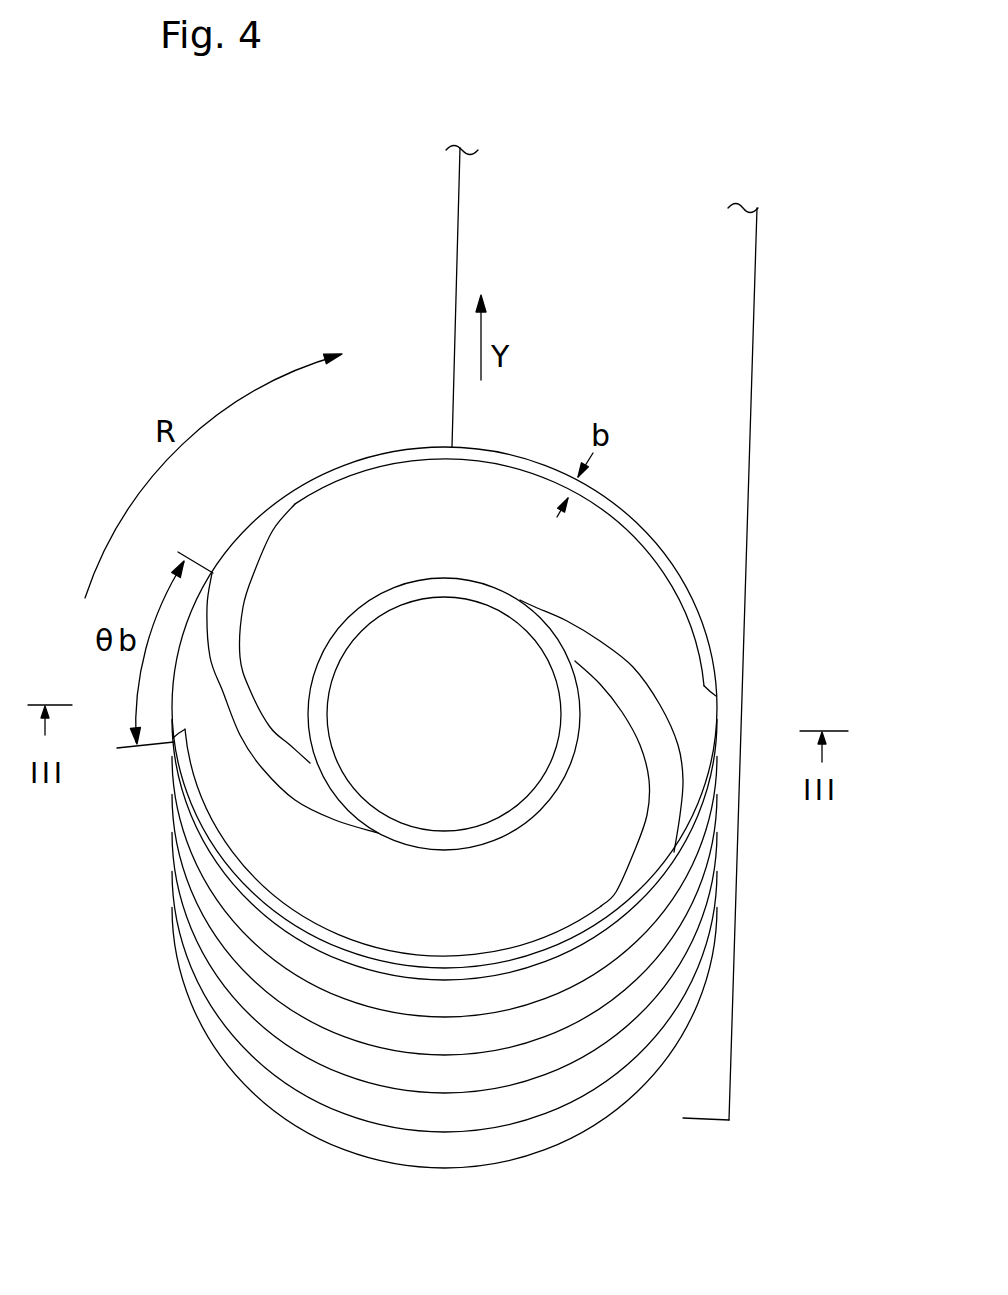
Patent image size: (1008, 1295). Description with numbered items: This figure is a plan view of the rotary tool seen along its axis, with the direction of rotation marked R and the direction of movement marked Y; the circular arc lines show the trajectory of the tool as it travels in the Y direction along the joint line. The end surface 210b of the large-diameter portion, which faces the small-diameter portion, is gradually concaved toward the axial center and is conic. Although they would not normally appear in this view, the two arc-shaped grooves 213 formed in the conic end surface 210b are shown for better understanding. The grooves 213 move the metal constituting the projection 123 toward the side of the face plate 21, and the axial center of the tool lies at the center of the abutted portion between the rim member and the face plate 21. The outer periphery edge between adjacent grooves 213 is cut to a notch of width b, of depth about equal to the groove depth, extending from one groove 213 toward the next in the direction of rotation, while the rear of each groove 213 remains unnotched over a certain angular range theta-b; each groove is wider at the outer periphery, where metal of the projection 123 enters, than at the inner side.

The face plate 21 is at (322, 269).
The end surface 210b is at (338, 525).
The groove 213 is at (622, 678).
The projection 123 is at (742, 322).